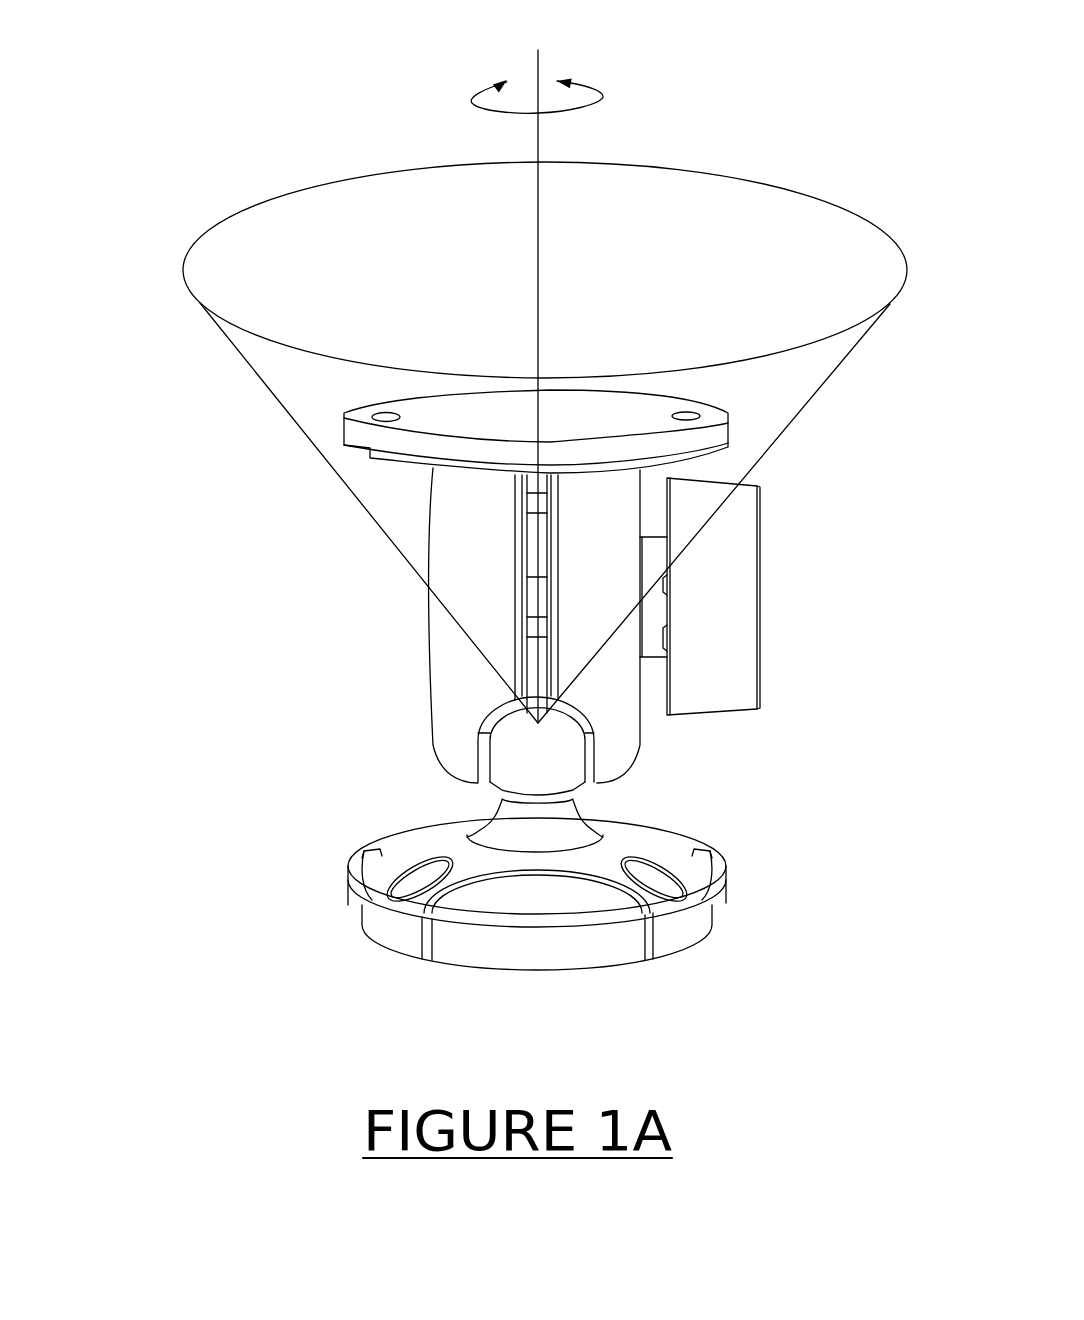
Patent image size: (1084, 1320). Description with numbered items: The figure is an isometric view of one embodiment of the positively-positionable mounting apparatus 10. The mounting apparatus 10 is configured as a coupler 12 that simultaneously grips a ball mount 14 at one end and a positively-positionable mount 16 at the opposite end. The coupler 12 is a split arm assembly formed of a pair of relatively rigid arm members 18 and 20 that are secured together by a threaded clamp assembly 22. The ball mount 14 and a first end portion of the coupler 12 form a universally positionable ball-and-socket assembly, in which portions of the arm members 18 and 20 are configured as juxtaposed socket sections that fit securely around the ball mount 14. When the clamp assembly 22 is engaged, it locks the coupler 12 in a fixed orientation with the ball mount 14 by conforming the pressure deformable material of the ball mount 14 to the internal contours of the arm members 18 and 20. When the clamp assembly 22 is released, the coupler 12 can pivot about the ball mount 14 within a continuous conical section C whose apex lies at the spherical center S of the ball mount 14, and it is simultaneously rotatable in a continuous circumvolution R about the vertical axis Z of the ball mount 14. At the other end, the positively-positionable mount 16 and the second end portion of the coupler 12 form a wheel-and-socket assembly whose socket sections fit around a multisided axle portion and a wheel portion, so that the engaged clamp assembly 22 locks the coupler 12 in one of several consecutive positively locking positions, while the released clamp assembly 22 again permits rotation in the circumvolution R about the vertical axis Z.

The mounting apparatus 10 is at (531, 525).
The coupler 12 is at (405, 728).
The ball mount 14 is at (562, 748).
The positively-positionable mount 16 is at (357, 403).
The arm member 18 is at (428, 503).
The arm member 20 is at (647, 475).
The threaded clamp assembly 22 is at (780, 583).
The vertical axis Z is at (545, 62).
The conical section C is at (732, 170).
The circumvolution R is at (524, 99).
The spherical center S is at (538, 735).